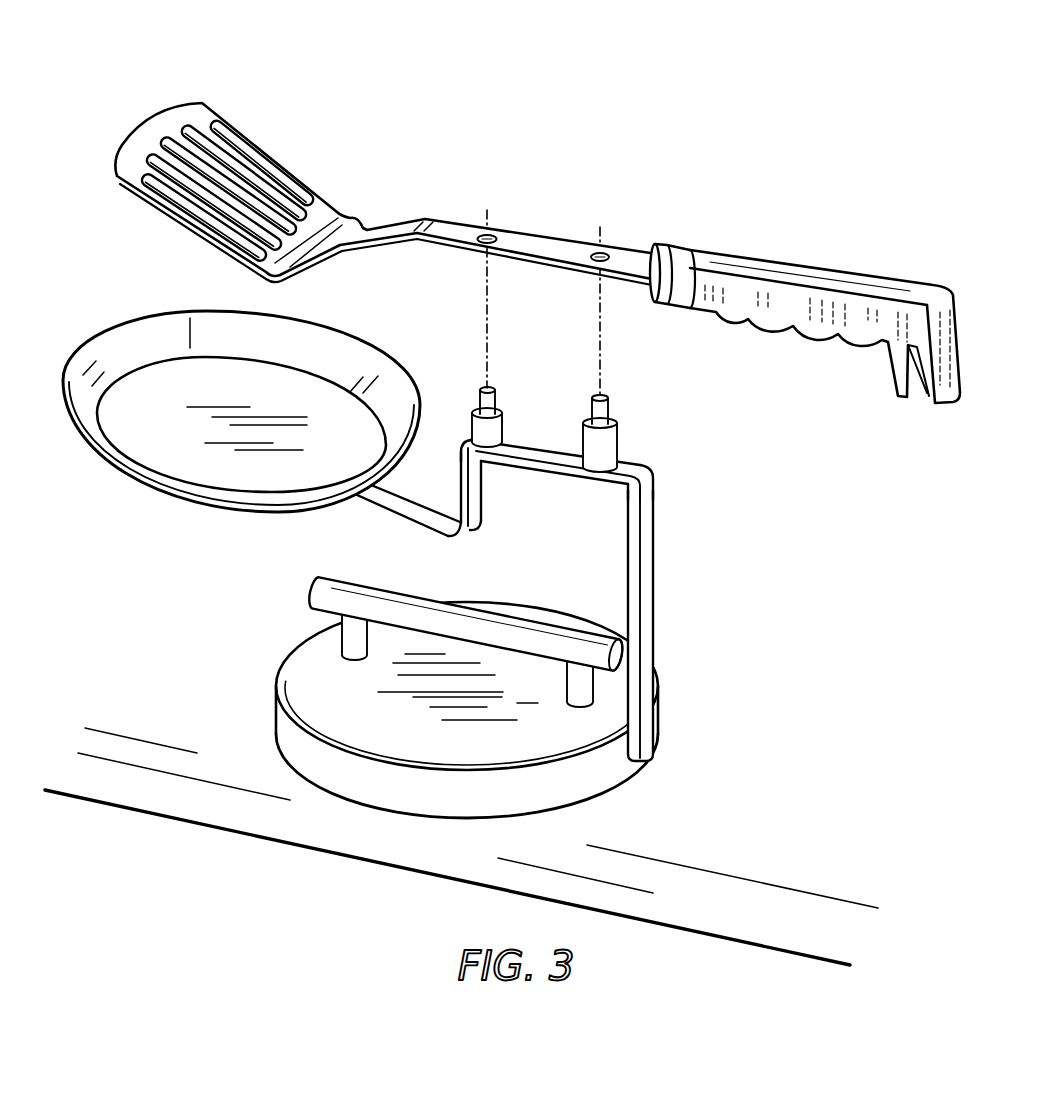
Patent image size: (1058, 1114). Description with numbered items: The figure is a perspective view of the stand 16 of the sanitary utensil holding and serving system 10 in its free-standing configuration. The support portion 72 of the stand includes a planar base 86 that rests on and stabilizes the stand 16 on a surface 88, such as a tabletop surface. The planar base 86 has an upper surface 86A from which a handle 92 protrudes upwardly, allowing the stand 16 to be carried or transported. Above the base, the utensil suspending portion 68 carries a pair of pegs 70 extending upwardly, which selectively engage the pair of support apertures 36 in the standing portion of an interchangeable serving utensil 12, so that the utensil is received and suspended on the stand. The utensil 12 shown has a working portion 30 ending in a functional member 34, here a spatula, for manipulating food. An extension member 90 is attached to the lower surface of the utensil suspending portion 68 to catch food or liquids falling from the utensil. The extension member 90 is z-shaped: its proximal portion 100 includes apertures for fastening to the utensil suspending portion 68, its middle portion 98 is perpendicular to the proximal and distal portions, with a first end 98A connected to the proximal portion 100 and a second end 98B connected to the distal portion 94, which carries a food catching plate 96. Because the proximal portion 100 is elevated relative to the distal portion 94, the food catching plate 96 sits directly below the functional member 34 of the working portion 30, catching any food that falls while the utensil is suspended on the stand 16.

The sanitary utensil holding and serving system 10 is at (511, 420).
The interchangeable serving utensil 12 is at (537, 229).
The stand 16 is at (554, 588).
The working portion 30 is at (290, 162).
The functional member 34 is at (190, 118).
The support apertures 36 is at (483, 233).
The utensil suspending portion 68 is at (534, 440).
The pegs 70 is at (493, 400).
The support portion 72 is at (620, 790).
The planar base 86 is at (467, 719).
The upper surface 86A is at (357, 704).
The surface 88 is at (733, 905).
The extension member 90 is at (261, 412).
The handle 92 is at (407, 605).
The distal portion 94 is at (418, 502).
The food catching plate 96 is at (140, 342).
The middle portion 98 is at (473, 474).
The first end 98A is at (462, 444).
The second end 98B is at (468, 530).
The proximal portion 100 is at (565, 480).